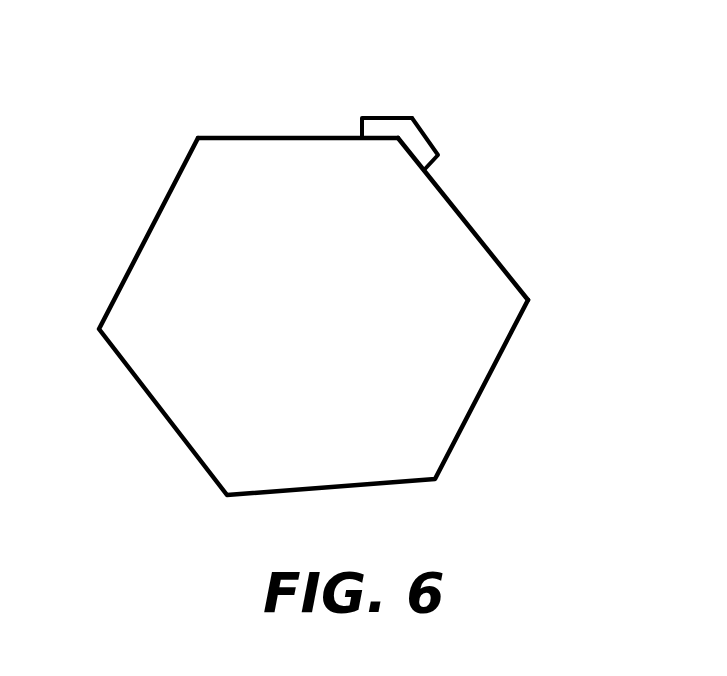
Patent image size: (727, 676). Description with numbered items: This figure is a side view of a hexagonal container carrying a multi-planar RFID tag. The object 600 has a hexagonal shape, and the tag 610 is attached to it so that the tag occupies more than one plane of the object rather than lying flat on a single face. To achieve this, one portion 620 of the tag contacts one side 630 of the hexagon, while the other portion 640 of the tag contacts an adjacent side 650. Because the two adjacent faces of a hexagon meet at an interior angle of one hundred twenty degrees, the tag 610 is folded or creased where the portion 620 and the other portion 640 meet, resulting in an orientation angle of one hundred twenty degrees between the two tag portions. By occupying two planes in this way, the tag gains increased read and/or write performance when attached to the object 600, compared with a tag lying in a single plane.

The object 600 is at (306, 262).
The tag 610 is at (416, 107).
The portion 620 is at (388, 118).
The side 630 is at (280, 137).
The other portion 640 is at (430, 130).
The adjacent side 650 is at (468, 222).